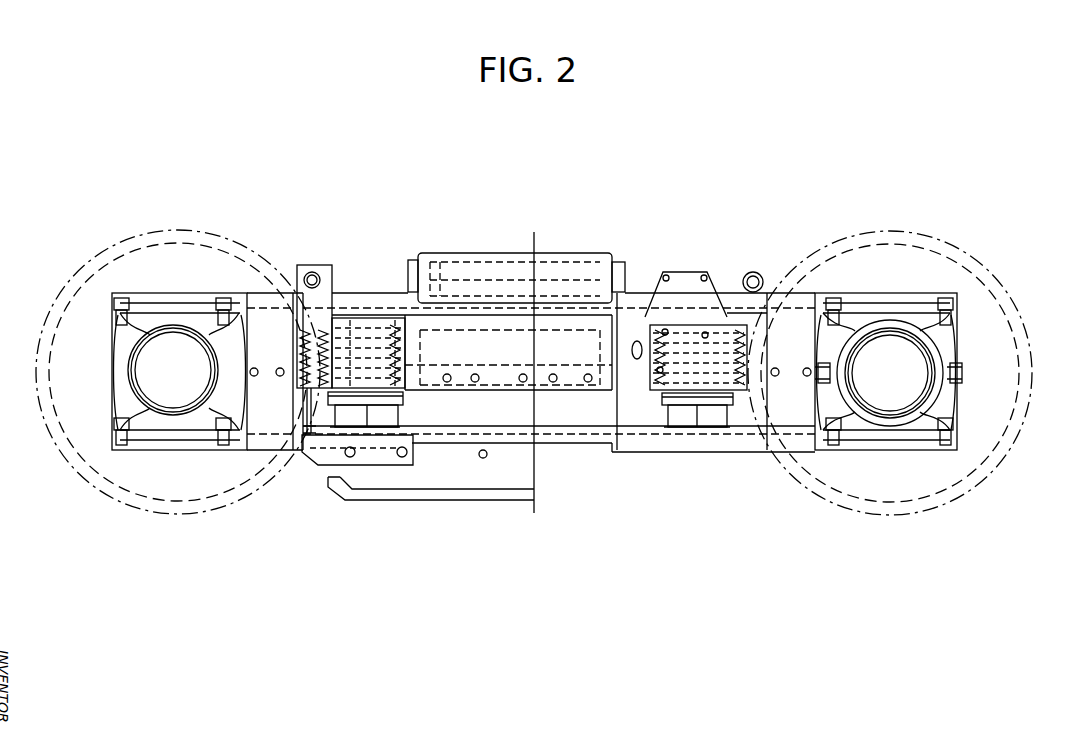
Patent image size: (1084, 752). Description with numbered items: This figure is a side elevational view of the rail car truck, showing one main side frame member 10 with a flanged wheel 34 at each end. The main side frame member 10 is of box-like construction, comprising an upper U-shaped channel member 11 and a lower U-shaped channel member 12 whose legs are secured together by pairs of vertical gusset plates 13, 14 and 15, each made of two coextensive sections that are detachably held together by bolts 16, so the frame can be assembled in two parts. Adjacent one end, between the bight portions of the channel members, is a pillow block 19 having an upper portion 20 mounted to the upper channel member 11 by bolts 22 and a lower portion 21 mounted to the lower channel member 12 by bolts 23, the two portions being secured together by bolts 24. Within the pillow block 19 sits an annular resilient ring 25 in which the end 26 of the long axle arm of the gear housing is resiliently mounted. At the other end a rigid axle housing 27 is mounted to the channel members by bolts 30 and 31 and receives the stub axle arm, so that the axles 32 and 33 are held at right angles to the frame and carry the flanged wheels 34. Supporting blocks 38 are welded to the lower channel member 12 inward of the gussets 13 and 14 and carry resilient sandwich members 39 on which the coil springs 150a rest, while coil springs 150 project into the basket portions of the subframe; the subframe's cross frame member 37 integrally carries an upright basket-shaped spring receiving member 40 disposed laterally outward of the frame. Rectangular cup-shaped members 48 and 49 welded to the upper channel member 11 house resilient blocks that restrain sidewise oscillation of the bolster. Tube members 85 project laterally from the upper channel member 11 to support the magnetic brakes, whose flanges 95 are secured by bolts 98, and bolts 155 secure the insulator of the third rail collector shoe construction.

The main side frame member 10 is at (686, 462).
The upper U-shaped channel member 11 is at (350, 300).
The lower U-shaped channel member 12 is at (730, 440).
The gusset plates 13 is at (268, 418).
The gusset plates 14 is at (800, 420).
The gusset plates 15 is at (566, 438).
The bolts 16 is at (281, 368).
The pillow block 19 is at (975, 343).
The upper portion of pillow block 20 is at (920, 322).
The lower portion of pillow block 21 is at (915, 422).
The bolts 22 is at (833, 300).
The bolts 23 is at (840, 432).
The bolts 24 is at (826, 383).
The annular resilient ring 25 is at (888, 326).
The long axle arm end 26 is at (866, 330).
The rigid axle housing 27 is at (153, 353).
The bolts 30 is at (224, 302).
The bolts 31 is at (125, 437).
The axle 32 is at (173, 370).
The axle 33 is at (910, 392).
The flanged wheels 34 is at (128, 245).
The cross frame member 37 is at (341, 322).
The supporting blocks 38 is at (392, 418).
The resilient sandwich members 39 is at (332, 399).
The upright basket-shaped spring receiving member 40 is at (472, 332).
The rectangular cup-shaped member 48 is at (413, 262).
The rectangular cup-shaped member 49 is at (618, 262).
The tube members 85 is at (302, 326).
The flanges 95 is at (306, 452).
The bolts 98 is at (404, 457).
The coil springs 150 is at (378, 320).
The coil springs 150a is at (390, 366).
The bolts 155 is at (667, 272).